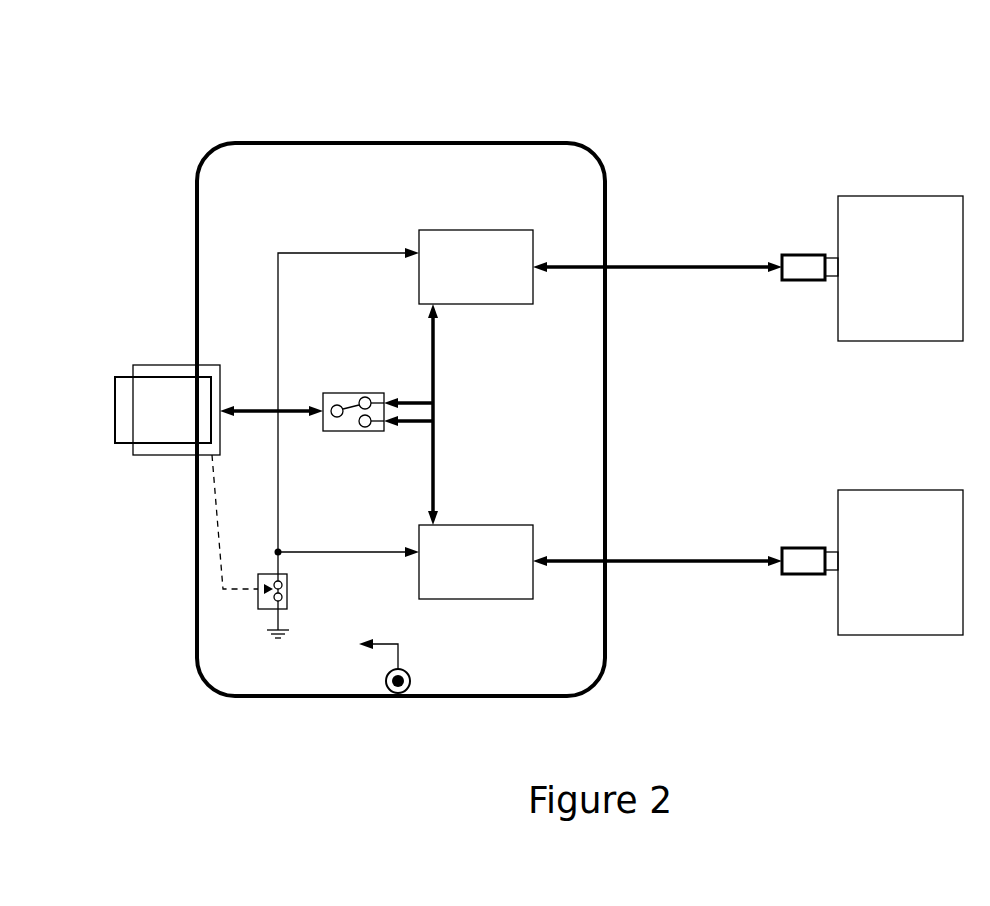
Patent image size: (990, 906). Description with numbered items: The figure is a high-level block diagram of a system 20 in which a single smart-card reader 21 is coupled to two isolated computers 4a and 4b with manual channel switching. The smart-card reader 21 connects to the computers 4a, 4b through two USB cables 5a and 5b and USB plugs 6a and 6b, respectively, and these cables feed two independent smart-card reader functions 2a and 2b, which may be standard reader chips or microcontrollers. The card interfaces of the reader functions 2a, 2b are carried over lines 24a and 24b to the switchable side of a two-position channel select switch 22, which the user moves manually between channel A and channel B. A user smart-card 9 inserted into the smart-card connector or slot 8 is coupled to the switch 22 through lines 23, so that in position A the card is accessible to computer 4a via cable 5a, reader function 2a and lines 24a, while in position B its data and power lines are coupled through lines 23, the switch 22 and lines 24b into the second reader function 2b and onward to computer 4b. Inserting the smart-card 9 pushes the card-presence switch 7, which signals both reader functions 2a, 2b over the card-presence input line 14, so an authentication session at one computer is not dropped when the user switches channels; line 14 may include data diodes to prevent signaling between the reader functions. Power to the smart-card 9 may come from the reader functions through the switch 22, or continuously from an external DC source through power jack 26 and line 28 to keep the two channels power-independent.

The system 20 is at (78, 73).
The smart-card reader 21 is at (607, 410).
The smart-card reader function 2a is at (472, 230).
The smart-card reader function 2b is at (473, 525).
The channel select switch 22 is at (357, 393).
The lines 23 is at (258, 408).
The lines 24a is at (435, 366).
The smart-card interface lines 24b is at (435, 434).
The USB cable 5a is at (699, 265).
The USB cable 5b is at (699, 559).
The USB plug 6a is at (808, 255).
The USB plug 6b is at (808, 548).
The computer 4a is at (892, 196).
The computer 4b is at (892, 490).
The smart-card connector or slot 8 is at (173, 365).
The smart-card 9 is at (115, 403).
The card-presence input line 14 is at (280, 505).
The card-presence switch 7 is at (290, 593).
The line 28 is at (381, 644).
The power jack 26 is at (398, 698).